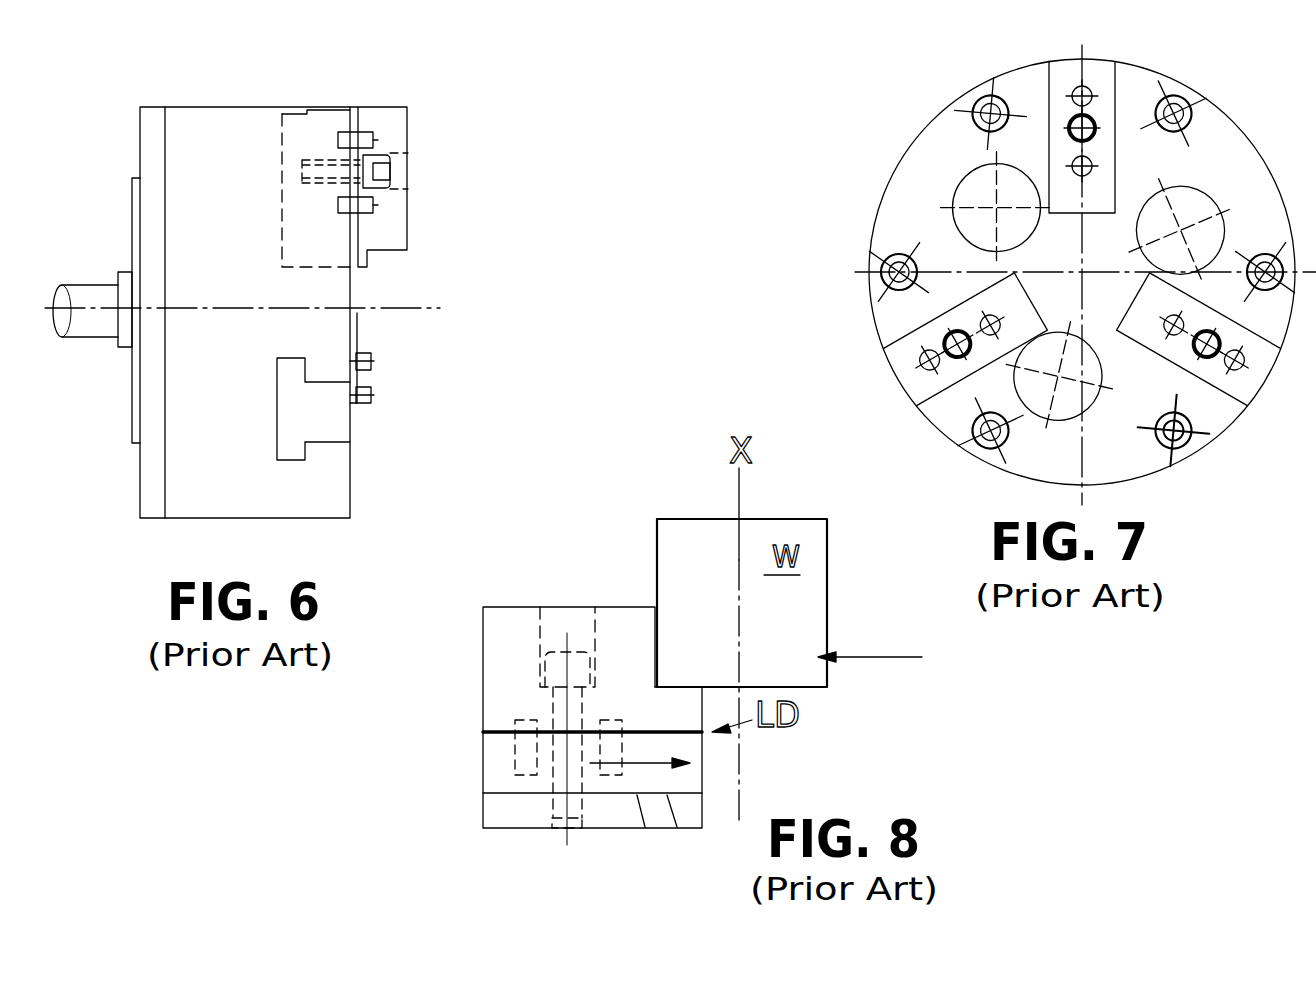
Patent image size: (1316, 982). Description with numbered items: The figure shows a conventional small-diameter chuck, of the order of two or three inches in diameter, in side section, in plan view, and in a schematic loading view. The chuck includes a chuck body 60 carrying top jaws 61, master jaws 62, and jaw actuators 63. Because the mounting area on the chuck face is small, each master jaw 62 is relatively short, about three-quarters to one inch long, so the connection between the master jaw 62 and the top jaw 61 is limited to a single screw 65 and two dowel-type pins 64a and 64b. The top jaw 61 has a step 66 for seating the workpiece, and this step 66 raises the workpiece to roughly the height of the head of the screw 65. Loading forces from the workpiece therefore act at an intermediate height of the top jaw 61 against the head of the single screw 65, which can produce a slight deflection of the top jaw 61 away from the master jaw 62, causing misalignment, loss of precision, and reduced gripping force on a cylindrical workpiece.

In FIG. 6, the chuck body 60 is at (256, 504).
In FIG. 7, the chuck body 60 is at (1255, 168).
In FIG. 6, the top jaw 61 is at (358, 239).
In FIG. 8, the top jaw 61 is at (488, 620).
In FIG. 6, the master jaw 62 is at (288, 238).
In FIG. 7, the master jaw 62 is at (1103, 73).
In FIG. 8, the master jaw 62 is at (495, 757).
In FIG. 7, the jaw actuator 63 is at (963, 185).
In FIG. 6, the dowel-type pin 64a is at (370, 137).
In FIG. 7, the dowel-type pin 64a is at (914, 354).
In FIG. 8, the dowel-type pin 64a is at (515, 727).
In FIG. 6, the dowel-type pin 64b is at (372, 204).
In FIG. 7, the dowel-type pin 64b is at (987, 312).
In FIG. 8, the dowel-type pin 64b is at (618, 750).
In FIG. 6, the screw 65 is at (390, 171).
In FIG. 7, the screw 65 is at (954, 328).
In FIG. 8, the screw 65 is at (573, 640).
In FIG. 8, the step 66 is at (683, 708).